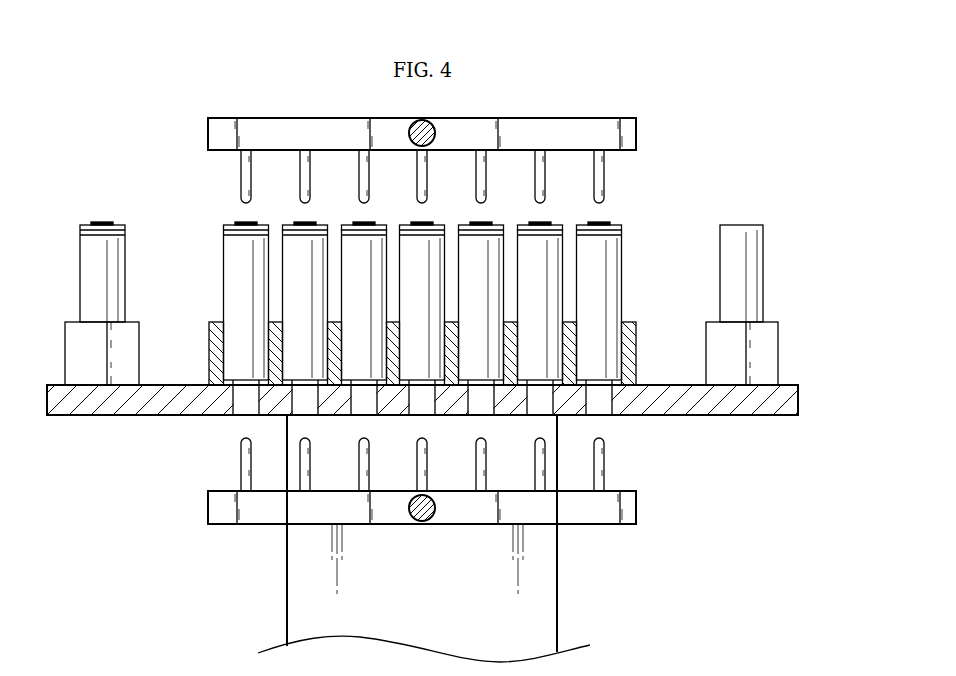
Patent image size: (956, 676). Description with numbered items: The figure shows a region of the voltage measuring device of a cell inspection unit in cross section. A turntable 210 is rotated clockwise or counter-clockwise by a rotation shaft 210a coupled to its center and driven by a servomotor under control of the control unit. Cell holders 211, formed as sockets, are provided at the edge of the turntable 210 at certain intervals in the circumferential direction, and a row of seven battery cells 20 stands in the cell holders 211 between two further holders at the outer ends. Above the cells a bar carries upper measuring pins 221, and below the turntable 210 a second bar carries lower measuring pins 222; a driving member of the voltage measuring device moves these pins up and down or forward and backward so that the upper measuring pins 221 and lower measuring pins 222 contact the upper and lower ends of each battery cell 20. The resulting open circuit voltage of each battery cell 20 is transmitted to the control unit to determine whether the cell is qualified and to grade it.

The battery cell 20 is at (223, 255).
The turntable 210 is at (728, 416).
The rotation shaft 210a is at (558, 580).
The cell holder 211 is at (65, 350).
The upper measuring pin 221 is at (604, 178).
The lower measuring pin 222 is at (604, 467).